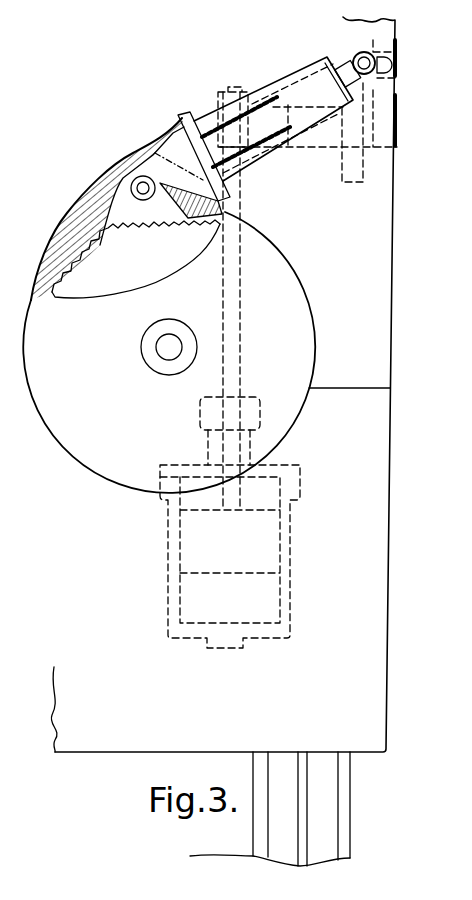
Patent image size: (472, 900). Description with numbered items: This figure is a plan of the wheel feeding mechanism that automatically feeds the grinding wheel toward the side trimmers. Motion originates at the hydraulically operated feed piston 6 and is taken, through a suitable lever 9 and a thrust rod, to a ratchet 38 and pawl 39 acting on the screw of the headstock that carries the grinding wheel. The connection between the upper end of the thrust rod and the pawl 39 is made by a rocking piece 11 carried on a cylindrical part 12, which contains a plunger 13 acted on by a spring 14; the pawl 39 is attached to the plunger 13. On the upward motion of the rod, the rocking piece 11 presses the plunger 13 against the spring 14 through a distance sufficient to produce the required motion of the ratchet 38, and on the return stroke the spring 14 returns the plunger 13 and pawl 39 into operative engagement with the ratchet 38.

The hydraulically operated piston 6 is at (263, 537).
The lever 9 is at (385, 100).
The rocking piece 11 is at (348, 60).
The cylindrical part 12 is at (303, 63).
The plunger 13 is at (288, 93).
The spring 14 is at (222, 123).
The ratchet 38 is at (112, 265).
The pawl 39 is at (124, 228).